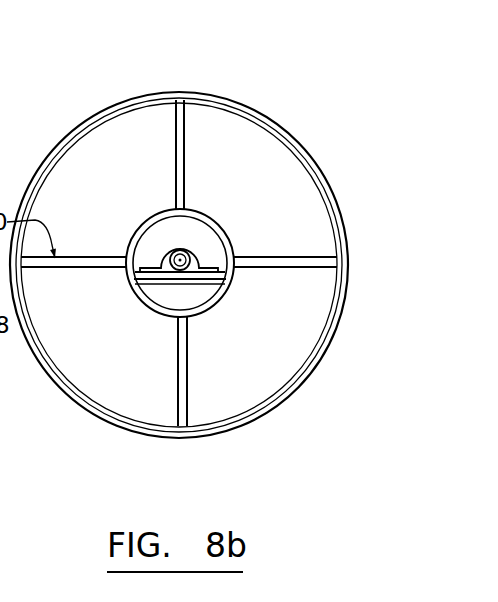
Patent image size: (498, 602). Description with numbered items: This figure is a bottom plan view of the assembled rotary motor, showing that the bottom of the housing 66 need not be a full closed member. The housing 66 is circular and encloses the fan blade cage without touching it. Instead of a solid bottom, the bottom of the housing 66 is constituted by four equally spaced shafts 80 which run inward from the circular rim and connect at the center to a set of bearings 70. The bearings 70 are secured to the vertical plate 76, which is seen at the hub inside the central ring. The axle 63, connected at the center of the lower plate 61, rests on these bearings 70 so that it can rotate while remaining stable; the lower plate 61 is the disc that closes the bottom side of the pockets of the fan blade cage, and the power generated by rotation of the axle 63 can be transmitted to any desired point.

The lower plate 61 is at (108, 189).
The axle 63 is at (170, 248).
The housing 66 is at (82, 117).
The bearings 70 is at (191, 265).
The vertical plate 76 is at (157, 283).
The equally spaced shafts 80 is at (179, 134).